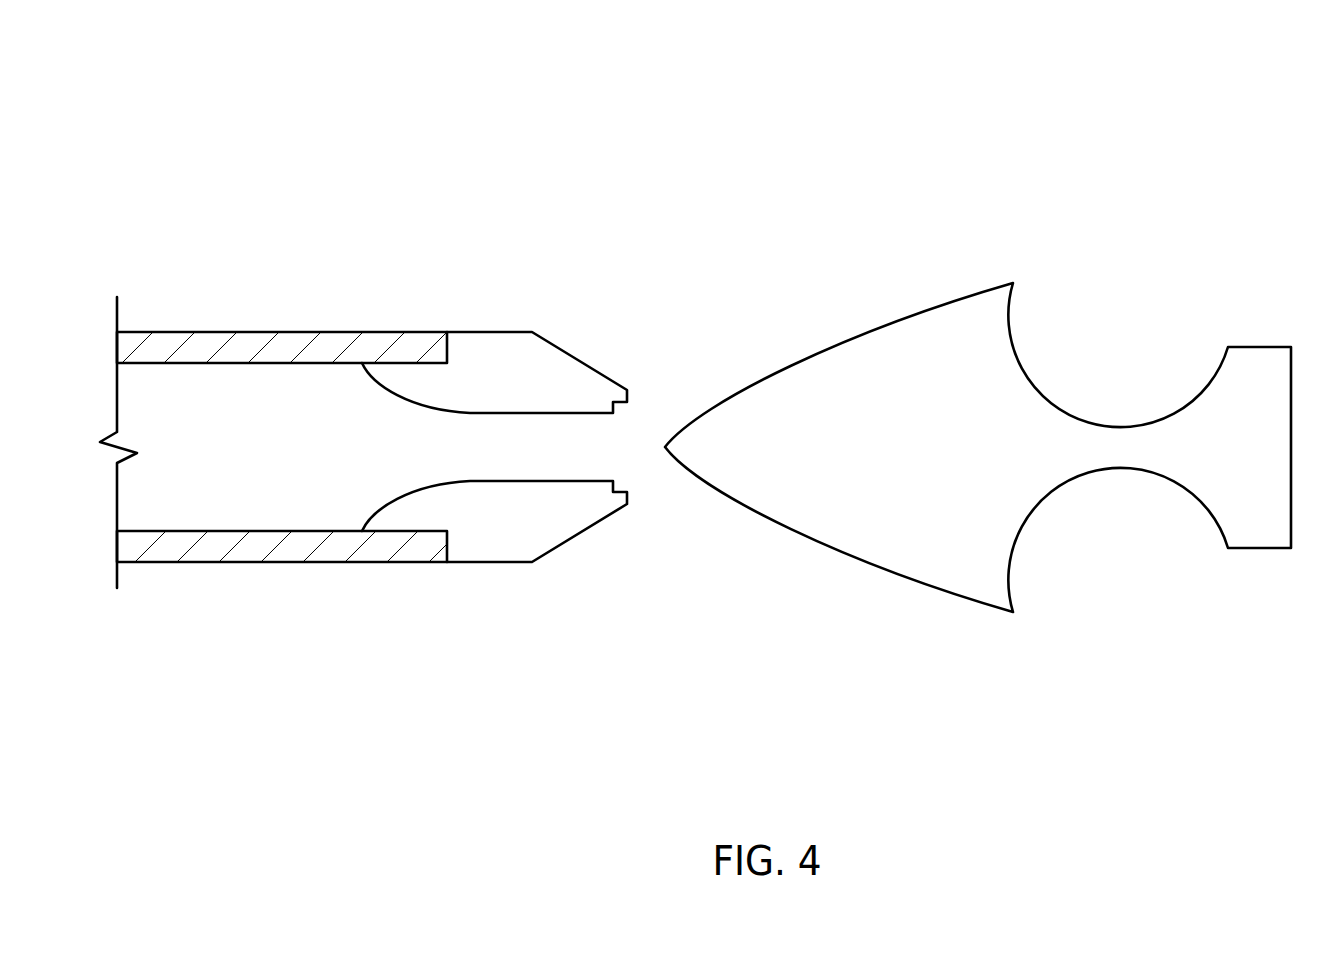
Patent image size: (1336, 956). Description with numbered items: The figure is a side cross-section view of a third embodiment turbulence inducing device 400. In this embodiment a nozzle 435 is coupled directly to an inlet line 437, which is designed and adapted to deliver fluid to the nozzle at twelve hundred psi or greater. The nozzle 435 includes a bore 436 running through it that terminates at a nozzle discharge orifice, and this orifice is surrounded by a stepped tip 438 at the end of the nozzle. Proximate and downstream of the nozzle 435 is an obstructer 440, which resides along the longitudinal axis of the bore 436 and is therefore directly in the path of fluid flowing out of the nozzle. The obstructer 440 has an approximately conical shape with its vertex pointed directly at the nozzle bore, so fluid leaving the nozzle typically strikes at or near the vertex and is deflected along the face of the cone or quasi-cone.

The turbulence inducing device 400 is at (367, 77).
The nozzle 435 is at (500, 565).
The bore 436 is at (556, 442).
The inlet line 437 is at (193, 525).
The stepped tip 438 is at (622, 490).
The obstructer 440 is at (877, 563).